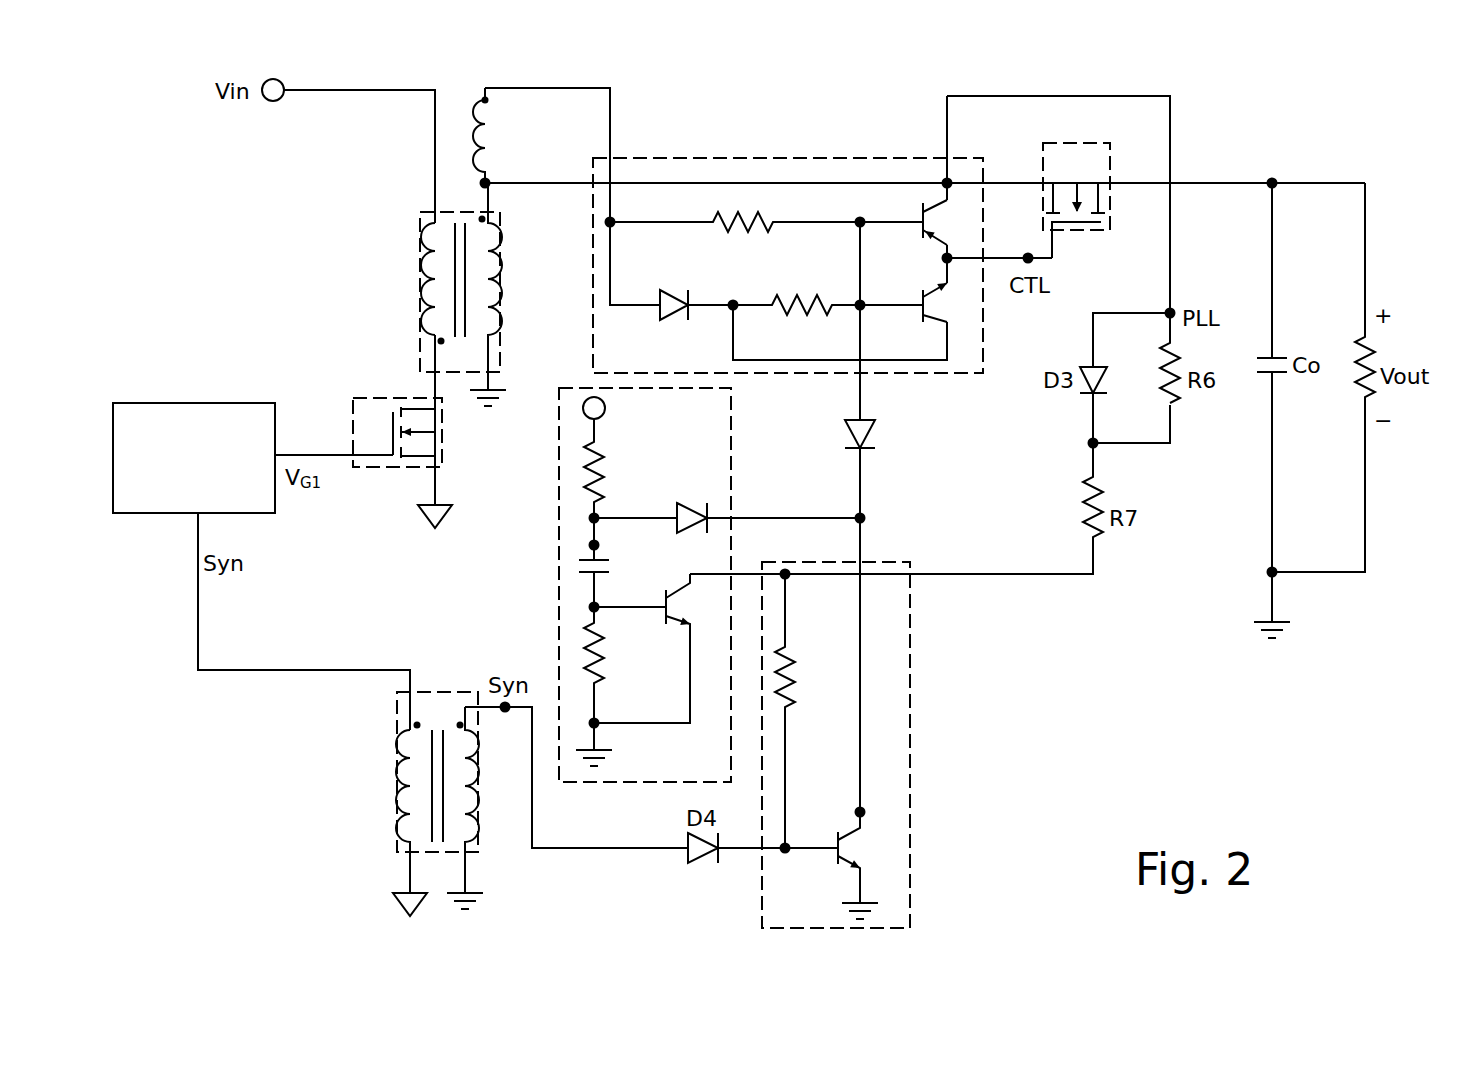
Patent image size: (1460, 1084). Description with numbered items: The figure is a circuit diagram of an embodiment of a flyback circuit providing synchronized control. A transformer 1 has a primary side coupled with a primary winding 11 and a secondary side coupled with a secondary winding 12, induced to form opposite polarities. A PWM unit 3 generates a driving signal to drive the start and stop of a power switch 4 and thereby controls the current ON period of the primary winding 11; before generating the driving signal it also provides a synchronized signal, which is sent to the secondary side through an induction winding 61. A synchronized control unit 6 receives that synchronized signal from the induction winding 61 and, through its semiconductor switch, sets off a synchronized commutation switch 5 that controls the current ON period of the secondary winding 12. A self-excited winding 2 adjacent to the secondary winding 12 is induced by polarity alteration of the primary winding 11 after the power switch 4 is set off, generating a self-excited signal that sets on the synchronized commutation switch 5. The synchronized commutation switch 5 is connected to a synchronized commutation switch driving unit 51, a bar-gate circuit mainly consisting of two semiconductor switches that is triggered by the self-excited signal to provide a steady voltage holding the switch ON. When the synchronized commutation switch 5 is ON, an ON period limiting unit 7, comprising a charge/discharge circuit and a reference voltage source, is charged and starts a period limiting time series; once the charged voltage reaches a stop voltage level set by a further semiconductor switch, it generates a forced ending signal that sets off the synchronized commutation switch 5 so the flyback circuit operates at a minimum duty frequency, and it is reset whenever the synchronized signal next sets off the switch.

The transformer 1 is at (450, 286).
The primary winding 11 is at (435, 240).
The secondary winding 12 is at (475, 265).
The self-excited winding 2 is at (485, 118).
The PWM unit 3 is at (147, 500).
The power switch 4 is at (383, 464).
The synchronized commutation switch 5 is at (1105, 193).
The synchronized commutation switch driving unit 51 is at (816, 170).
The synchronized control unit 6 is at (895, 752).
The induction winding 61 is at (407, 803).
The ON period limiting unit 7 is at (575, 547).